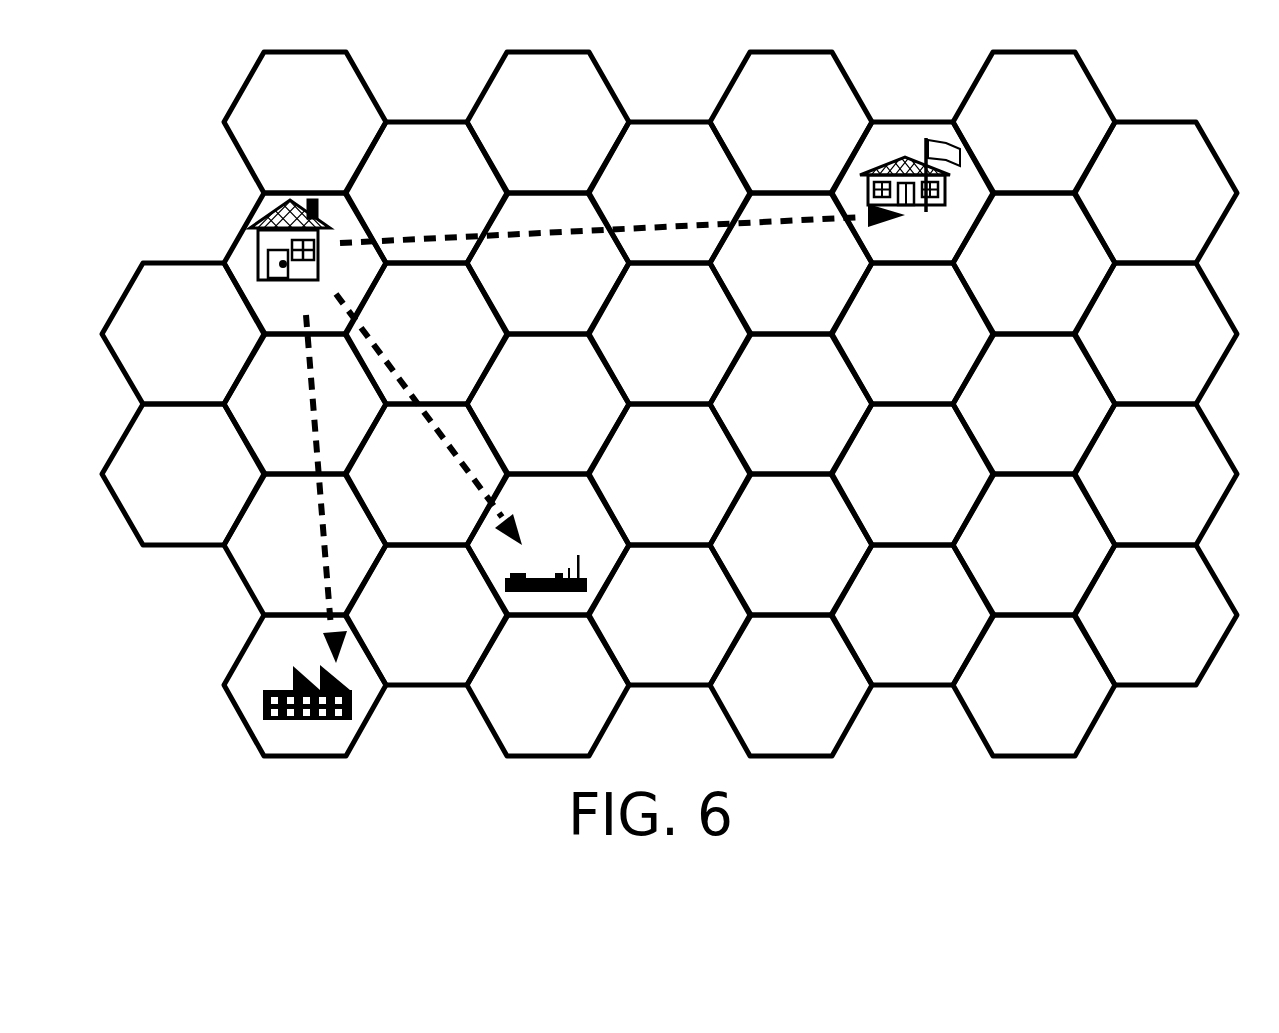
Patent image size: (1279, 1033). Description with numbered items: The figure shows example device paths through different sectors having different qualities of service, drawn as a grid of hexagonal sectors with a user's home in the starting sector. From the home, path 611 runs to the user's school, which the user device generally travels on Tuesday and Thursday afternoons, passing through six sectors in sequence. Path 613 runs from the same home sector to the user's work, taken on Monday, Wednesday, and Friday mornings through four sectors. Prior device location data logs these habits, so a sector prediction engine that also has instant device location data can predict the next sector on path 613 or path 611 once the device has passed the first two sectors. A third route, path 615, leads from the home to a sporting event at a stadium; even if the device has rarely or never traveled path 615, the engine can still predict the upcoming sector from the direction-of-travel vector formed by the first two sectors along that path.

The path 611 is at (393, 241).
The path 613 is at (318, 423).
The path 615 is at (365, 328).